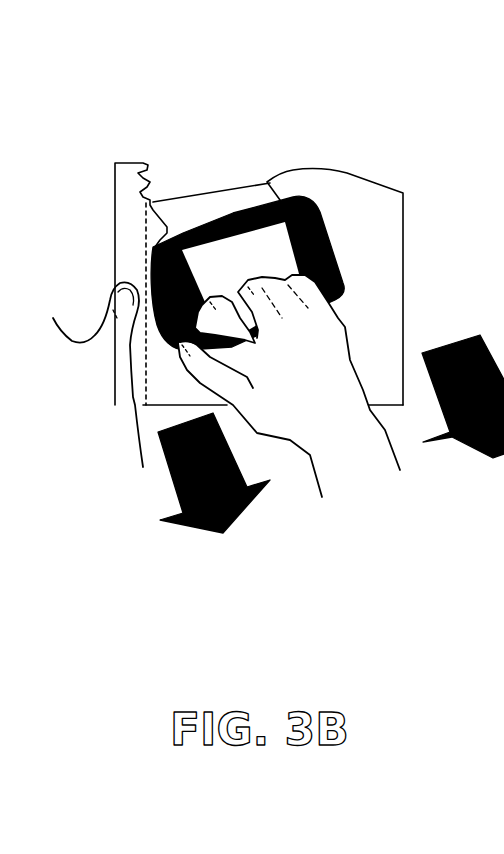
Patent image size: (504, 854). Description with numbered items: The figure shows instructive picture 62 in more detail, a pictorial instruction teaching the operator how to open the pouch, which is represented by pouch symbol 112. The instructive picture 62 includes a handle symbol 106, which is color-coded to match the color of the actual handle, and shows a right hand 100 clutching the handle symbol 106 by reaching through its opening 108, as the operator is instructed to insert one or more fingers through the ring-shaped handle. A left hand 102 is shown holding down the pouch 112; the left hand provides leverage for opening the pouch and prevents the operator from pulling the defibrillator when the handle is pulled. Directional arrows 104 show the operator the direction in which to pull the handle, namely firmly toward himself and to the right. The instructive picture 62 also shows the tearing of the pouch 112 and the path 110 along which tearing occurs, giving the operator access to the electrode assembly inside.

The instructive picture 62 is at (263, 87).
The right hand 100 is at (327, 347).
The left hand 102 is at (100, 369).
The directional arrows 104 is at (173, 483).
The handle symbol 106 is at (276, 273).
The opening 108 is at (287, 266).
The path 110 is at (130, 247).
The pouch symbol 112 is at (405, 249).